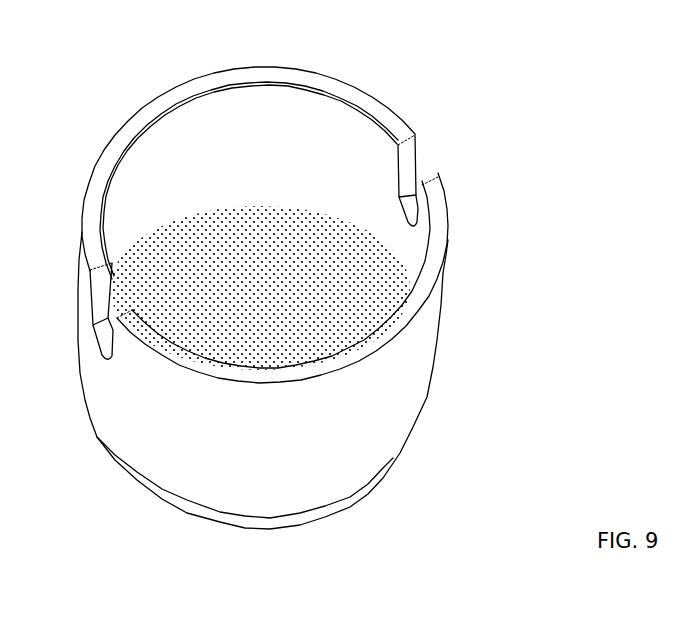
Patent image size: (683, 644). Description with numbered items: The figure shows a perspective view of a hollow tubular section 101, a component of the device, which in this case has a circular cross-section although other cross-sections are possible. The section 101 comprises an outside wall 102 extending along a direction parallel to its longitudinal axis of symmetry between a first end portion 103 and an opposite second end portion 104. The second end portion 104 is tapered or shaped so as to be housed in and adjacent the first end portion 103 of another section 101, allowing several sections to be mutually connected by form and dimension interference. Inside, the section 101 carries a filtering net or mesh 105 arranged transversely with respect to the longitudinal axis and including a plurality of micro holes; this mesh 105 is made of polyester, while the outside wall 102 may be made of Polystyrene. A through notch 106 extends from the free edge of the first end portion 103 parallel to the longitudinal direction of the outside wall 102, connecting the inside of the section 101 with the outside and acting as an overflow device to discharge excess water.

The hollow tubular section 101 is at (282, 422).
The outside wall 102 is at (327, 402).
The first end portion 103 is at (110, 138).
The second end portion 104 is at (270, 523).
The filtering net or mesh 105 is at (258, 298).
The through notch 106 is at (405, 175).